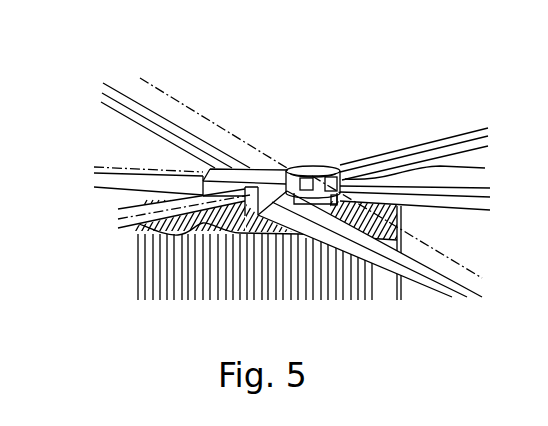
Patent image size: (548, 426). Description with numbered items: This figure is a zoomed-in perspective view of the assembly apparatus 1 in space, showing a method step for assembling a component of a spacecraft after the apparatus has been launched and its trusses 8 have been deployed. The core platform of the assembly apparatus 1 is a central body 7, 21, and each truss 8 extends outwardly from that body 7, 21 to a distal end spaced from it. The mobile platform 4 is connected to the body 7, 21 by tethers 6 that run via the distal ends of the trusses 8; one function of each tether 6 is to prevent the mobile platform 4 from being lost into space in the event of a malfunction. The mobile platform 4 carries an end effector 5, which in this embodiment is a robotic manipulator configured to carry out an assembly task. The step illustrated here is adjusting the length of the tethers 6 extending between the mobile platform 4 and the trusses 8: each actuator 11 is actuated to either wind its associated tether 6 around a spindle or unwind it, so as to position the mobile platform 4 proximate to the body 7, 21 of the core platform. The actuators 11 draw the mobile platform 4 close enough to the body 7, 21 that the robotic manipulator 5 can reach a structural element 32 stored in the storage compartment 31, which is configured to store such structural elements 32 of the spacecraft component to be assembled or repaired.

The assembly apparatus 1 is at (348, 99).
The mobile platform 4 is at (301, 164).
The end effector 5 is at (240, 218).
The tether 6 is at (187, 103).
The body 7 is at (245, 113).
The central body 21 is at (262, 167).
The truss 8 is at (440, 142).
The actuator 11 is at (430, 170).
The storage compartment 31 is at (163, 307).
The structural element 32 is at (347, 293).